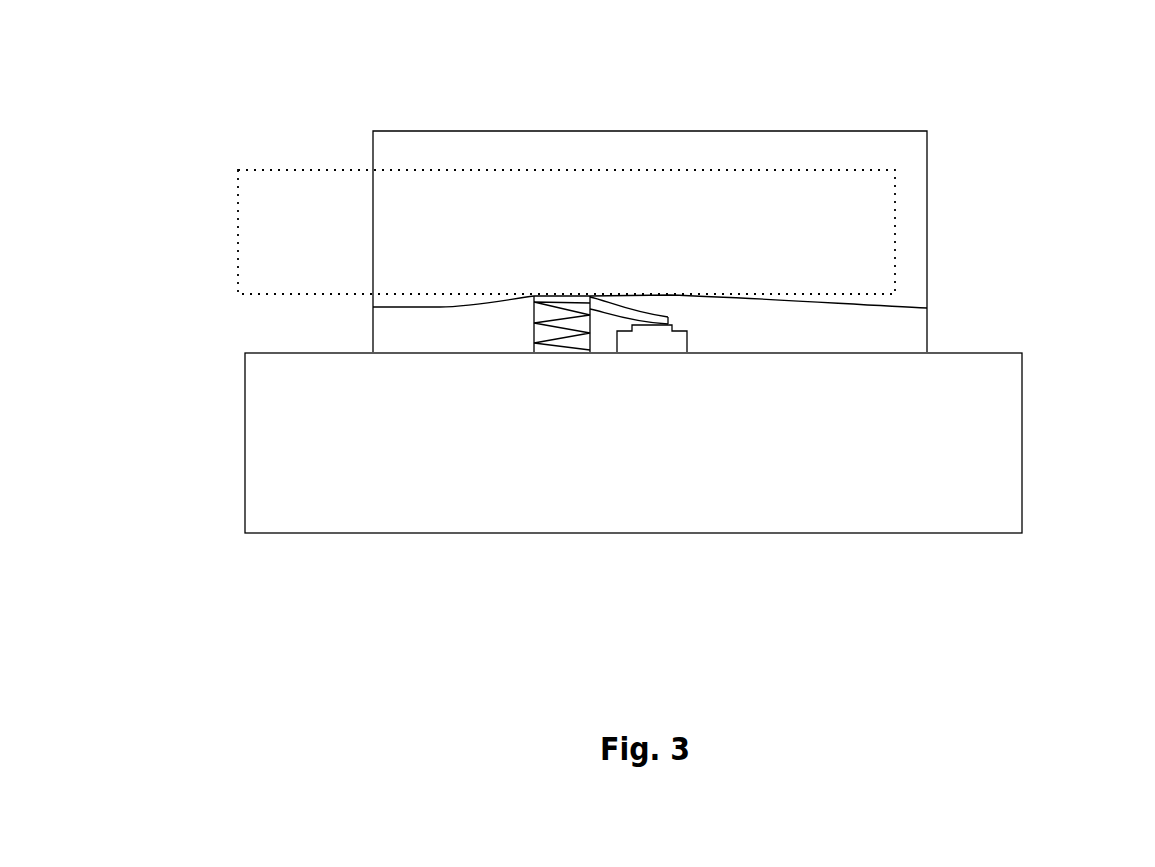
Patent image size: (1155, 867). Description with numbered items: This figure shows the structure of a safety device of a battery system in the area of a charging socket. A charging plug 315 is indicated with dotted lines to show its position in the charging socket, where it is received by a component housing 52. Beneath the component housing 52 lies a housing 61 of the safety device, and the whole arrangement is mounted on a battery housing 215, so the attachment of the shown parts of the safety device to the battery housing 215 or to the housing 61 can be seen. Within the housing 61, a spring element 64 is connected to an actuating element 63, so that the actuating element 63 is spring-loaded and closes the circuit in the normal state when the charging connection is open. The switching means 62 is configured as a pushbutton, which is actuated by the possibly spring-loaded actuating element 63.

The battery housing 215 is at (1022, 415).
The component housing 52 is at (800, 130).
The charging plug 315 is at (300, 168).
The housing 61 is at (372, 333).
The spring element 64 is at (567, 303).
The actuating element 63 is at (628, 310).
The switching means 62 is at (673, 318).